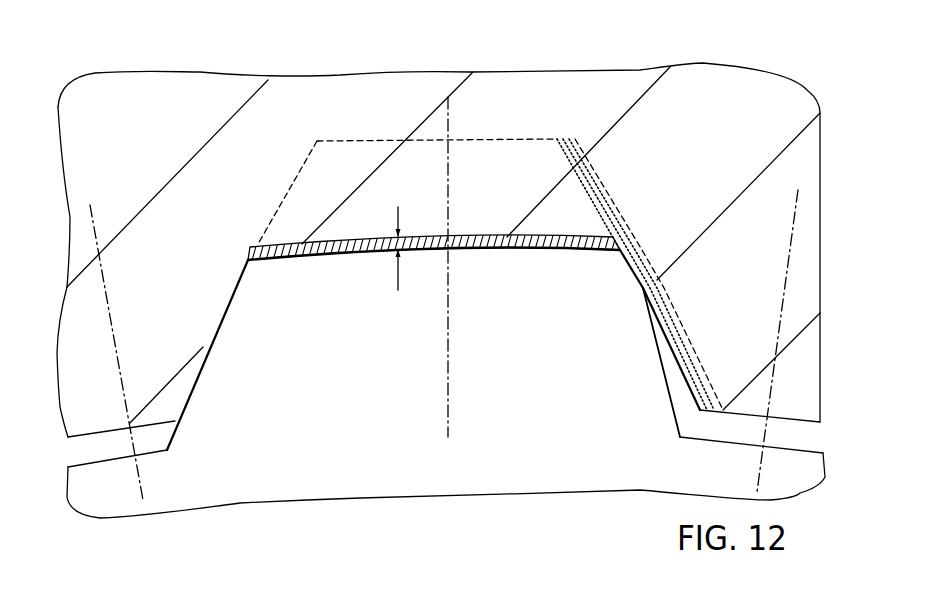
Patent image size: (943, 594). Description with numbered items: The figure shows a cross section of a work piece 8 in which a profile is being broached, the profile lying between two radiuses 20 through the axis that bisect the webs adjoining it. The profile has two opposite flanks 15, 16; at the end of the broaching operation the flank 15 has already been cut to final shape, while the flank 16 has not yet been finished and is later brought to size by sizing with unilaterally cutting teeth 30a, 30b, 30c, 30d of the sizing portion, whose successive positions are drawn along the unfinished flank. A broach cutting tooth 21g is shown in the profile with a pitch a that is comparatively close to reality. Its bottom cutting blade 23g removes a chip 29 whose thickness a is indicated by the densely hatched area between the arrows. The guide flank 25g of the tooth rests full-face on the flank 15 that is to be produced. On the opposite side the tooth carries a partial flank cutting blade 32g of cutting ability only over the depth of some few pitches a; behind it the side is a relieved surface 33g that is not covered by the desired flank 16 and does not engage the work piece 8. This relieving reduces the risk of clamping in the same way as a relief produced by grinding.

The work piece 8 is at (175, 103).
The flank 15 is at (226, 299).
The flank 16 is at (606, 218).
The radiuses 20 is at (110, 303).
The broach cutting tooth 21g is at (423, 409).
The bottom cutting blade 23g is at (283, 246).
The guide flank 25g is at (200, 367).
The chip 29 is at (485, 251).
The unilaterally cutting tooth 30a is at (550, 137).
The unilaterally cutting tooth 30b is at (558, 137).
The unilaterally cutting tooth 30c is at (565, 137).
The unilaterally cutting tooth 30d is at (573, 137).
The partial flank cutting blade 32g is at (631, 268).
The relieved surface 33g is at (663, 374).
The pitch / chip thickness a is at (408, 248).